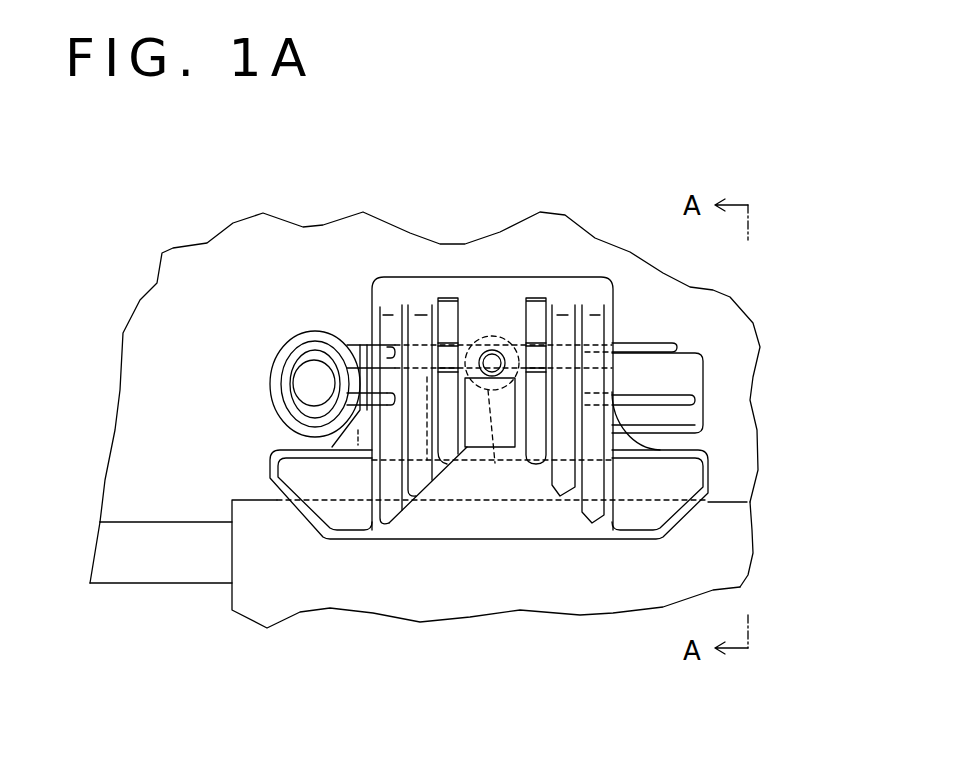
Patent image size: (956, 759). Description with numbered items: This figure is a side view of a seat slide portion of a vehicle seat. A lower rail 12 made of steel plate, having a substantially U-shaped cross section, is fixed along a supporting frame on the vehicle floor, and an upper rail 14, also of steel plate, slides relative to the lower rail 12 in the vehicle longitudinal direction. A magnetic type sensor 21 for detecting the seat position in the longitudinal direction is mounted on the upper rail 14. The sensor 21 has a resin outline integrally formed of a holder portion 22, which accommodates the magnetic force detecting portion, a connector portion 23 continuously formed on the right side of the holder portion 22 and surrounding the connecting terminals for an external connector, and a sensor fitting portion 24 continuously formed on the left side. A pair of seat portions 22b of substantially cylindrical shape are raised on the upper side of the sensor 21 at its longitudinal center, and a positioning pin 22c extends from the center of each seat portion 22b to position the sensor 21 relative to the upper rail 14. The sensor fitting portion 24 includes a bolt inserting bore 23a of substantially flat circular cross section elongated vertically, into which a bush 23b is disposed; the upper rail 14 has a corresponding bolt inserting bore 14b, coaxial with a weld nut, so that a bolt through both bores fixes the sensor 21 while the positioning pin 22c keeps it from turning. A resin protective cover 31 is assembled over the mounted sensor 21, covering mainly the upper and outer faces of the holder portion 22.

The upper rail 14 is at (707, 297).
The lower rail 12 is at (240, 590).
The protective cover 31 is at (700, 470).
The holder portion 22 is at (482, 338).
The positioning pin 22c is at (505, 348).
The seat portion 22b is at (473, 438).
The sensor 21 is at (620, 343).
The connector portion 23 is at (705, 380).
The sensor fitting portion 24 is at (319, 331).
The bush 23b is at (285, 371).
The bolt inserting bore 23a is at (283, 399).
The bolt inserting bore 14b is at (306, 362).